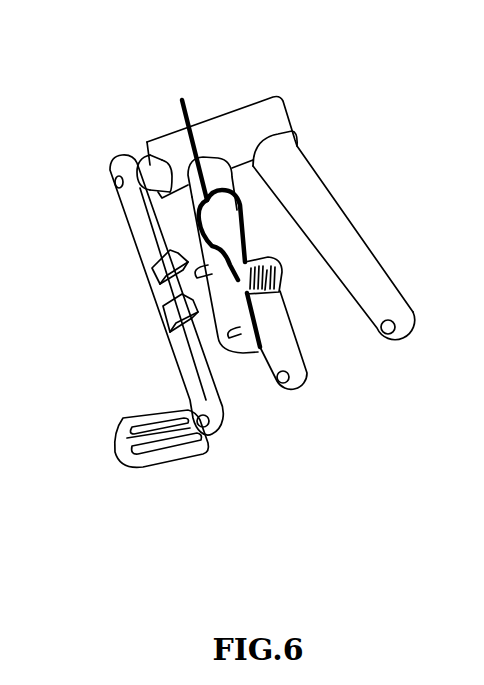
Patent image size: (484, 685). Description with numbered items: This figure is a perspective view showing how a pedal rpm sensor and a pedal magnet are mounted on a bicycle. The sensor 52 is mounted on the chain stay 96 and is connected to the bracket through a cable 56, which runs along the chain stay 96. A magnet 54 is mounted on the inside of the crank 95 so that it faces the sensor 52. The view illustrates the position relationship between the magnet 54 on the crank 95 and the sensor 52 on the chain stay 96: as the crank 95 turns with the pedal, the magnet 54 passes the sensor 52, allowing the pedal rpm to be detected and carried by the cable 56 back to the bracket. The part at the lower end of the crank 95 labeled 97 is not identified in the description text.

The upper clamp bracket 52 is at (196, 276).
The lower clamp bracket 54 is at (158, 303).
The pin 56 is at (190, 108).
The arm 95 is at (172, 358).
The cable 96 is at (290, 352).
The hook 97 is at (160, 462).